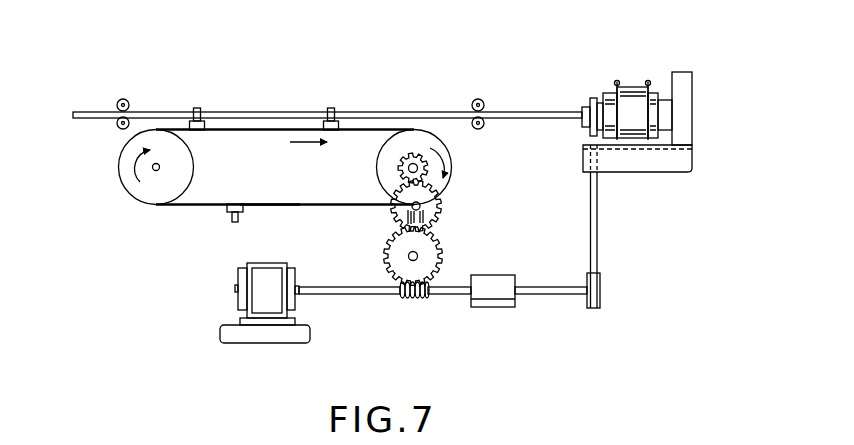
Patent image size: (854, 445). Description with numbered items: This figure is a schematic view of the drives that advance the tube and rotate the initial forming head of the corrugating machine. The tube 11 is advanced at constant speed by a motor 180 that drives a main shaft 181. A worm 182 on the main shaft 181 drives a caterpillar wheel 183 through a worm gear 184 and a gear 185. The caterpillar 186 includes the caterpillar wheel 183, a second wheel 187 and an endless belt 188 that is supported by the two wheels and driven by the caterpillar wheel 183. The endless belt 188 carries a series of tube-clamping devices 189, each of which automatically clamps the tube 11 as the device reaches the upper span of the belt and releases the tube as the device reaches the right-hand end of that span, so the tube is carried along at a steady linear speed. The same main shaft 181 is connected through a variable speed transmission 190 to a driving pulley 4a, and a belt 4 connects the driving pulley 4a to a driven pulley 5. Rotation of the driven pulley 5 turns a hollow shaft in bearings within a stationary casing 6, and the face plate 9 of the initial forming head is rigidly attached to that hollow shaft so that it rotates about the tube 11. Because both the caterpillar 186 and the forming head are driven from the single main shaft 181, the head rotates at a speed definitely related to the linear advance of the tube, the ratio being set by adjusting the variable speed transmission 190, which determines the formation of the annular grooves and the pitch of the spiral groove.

The tube 11 is at (288, 112).
The tube-clamping devices 189 is at (199, 108).
The second wheel 187 is at (152, 190).
The caterpillar 186 is at (178, 212).
The endless belt 188 is at (262, 204).
The caterpillar wheel 183 is at (437, 184).
The gear 185 is at (443, 204).
The worm gear 184 is at (445, 252).
The motor 180 is at (242, 304).
The main shaft 181 is at (320, 294).
The worm 182 is at (412, 298).
The variable speed transmission 190 is at (500, 307).
The belt 4 is at (590, 203).
The driving pulley 4a is at (600, 303).
The driven pulley 5 is at (590, 102).
The stationary casing 6 is at (632, 87).
The face plate 9 is at (685, 72).